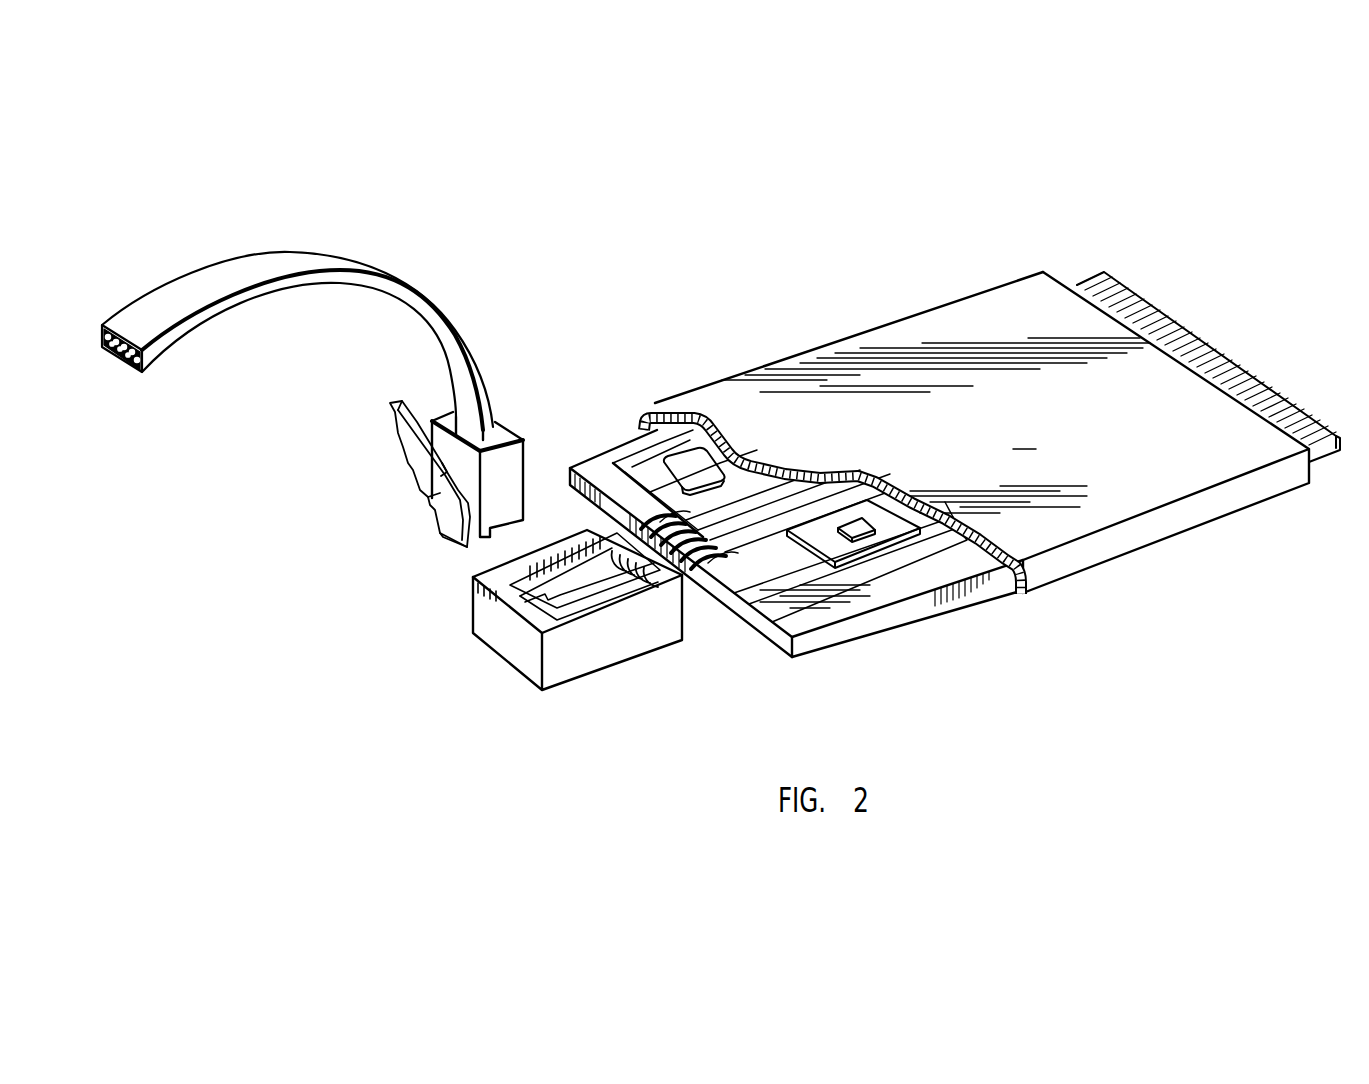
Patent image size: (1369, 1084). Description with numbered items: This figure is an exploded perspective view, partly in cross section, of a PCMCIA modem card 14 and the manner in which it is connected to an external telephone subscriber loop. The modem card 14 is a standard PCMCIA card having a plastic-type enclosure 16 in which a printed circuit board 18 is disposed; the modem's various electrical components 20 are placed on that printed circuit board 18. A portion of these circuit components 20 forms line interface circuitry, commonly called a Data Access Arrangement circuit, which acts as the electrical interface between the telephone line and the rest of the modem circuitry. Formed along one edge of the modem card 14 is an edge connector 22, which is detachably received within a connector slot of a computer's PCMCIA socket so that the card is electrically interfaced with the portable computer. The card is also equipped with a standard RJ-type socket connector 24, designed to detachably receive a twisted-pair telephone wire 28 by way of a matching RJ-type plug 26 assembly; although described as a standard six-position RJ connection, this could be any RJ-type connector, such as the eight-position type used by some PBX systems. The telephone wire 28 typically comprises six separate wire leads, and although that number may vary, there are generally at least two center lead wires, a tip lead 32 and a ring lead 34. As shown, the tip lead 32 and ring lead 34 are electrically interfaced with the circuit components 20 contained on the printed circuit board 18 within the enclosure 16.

The PCMCIA modem card 14 is at (939, 464).
The enclosure 16 is at (687, 412).
The printed circuit board 18 is at (604, 466).
The electrical components 20 is at (694, 468).
The edge connector 22 is at (1138, 302).
The RJ-11 socket connector 24 is at (570, 610).
The RJ-11 plug 26 is at (526, 438).
The twisted-pair telephone wire 28 is at (316, 258).
The tip lead 32 is at (637, 578).
The ring lead 34 is at (714, 576).